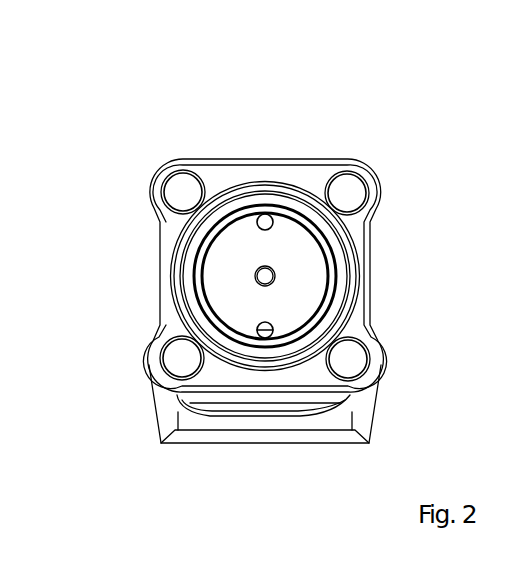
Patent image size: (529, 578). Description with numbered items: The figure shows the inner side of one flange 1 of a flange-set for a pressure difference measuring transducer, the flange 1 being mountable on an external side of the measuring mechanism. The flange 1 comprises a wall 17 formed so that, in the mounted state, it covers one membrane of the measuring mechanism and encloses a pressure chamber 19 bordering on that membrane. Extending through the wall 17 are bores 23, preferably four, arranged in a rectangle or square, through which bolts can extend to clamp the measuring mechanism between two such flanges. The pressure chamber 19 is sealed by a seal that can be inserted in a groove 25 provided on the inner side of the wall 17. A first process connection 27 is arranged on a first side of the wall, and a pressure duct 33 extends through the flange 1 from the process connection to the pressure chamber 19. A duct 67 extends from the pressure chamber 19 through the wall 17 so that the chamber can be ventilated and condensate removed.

The flange 1 is at (160, 121).
The wall 17 is at (163, 288).
The pressure chamber 19 is at (218, 273).
The bores 23 is at (170, 193).
The groove 25 is at (258, 192).
The first process connection 27 is at (200, 427).
The pressure duct 33 is at (266, 336).
The duct 67 is at (260, 216).